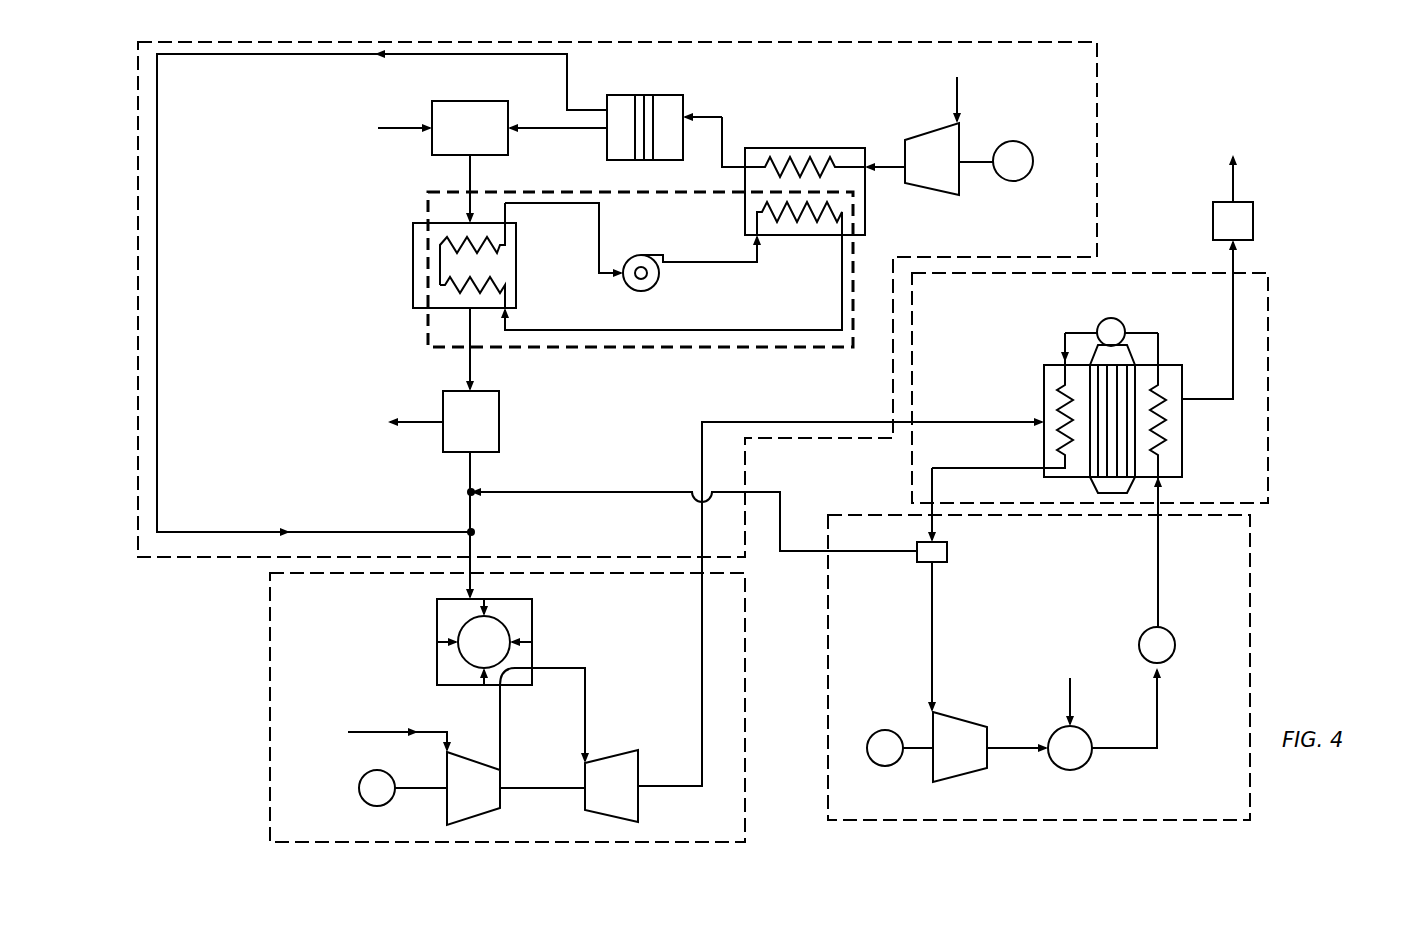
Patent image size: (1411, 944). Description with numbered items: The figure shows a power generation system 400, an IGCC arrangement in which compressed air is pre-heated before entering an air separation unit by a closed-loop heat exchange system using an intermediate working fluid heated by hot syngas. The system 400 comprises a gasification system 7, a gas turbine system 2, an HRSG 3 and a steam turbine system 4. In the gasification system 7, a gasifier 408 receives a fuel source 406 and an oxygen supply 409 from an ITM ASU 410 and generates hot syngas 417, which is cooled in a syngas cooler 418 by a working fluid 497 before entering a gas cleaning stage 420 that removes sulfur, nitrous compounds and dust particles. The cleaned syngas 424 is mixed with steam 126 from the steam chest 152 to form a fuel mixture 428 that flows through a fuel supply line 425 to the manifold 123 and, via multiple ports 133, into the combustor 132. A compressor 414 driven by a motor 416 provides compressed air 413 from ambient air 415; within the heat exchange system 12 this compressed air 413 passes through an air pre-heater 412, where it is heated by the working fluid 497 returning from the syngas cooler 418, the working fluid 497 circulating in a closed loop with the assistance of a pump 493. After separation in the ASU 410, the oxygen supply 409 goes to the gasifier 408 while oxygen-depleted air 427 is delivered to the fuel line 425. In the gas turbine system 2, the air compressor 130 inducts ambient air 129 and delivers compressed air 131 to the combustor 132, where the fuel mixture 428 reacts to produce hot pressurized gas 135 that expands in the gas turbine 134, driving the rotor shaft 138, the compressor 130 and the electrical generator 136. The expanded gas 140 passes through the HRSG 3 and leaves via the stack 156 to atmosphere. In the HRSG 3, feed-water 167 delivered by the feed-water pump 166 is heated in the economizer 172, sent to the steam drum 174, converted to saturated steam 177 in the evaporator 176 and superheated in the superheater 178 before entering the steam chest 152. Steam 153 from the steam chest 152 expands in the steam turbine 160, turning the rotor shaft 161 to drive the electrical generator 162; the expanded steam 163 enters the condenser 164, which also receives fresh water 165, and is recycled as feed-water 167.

The power generation system 400 is at (1301, 89).
The gasification system 7 is at (1097, 85).
The heat exchange system 12 is at (672, 347).
The gas turbine system 2 is at (270, 628).
The Heat Recovery Steam Generator 3 is at (1268, 336).
The steam turbine system 4 is at (1250, 575).
The oxygen-depleted air 427 is at (250, 520).
The gasifier 408 is at (470, 100).
The fuel source 406 is at (379, 128).
The ITM ASU 410 is at (657, 95).
The oxygen supply 409 is at (556, 137).
The compressed air 413 is at (702, 107).
The air pre-heater 412 is at (795, 148).
The compressor 414 is at (925, 190).
The ambient air 415 is at (968, 103).
The motor 416 is at (1013, 181).
The hot syngas 417 is at (455, 182).
The syngas cooler 418 is at (413, 262).
The working fluid 497 is at (574, 186).
The pump 493 is at (655, 287).
The gas cleaning stage 420 is at (499, 412).
The cleaned syngas 424 is at (456, 482).
The steam 126 is at (557, 483).
The fuel supply line 425 is at (468, 514).
The fuel mixture 428 is at (485, 522).
The manifold 123 is at (437, 612).
The combustor 132 is at (500, 624).
The ports 133 is at (515, 642).
The hot pressurized gas 135 is at (594, 698).
The ambient air 129 is at (392, 722).
The air compressor 130 is at (447, 810).
The electrical generator 136 is at (362, 778).
The rotor shaft 138 is at (573, 790).
The compressed air 131 is at (515, 735).
The gas turbine 134 is at (638, 812).
The expanded gas 140 is at (688, 716).
The stack 156 is at (1253, 218).
The superheater 178 is at (1058, 410).
The evaporator 176 is at (1085, 462).
The steam drum 174 is at (1114, 320).
The economizer 172 is at (1165, 410).
The saturated steam 177 is at (1080, 325).
The steam chest 152 is at (947, 552).
The steam 153 is at (945, 640).
The steam turbine 160 is at (960, 782).
The rotor shaft 161 is at (920, 760).
The electrical generator 162 is at (918, 735).
The expanded steam 163 is at (1025, 735).
The condenser 164 is at (1085, 766).
The fresh water 165 is at (1073, 705).
The feed-water pump 166 is at (1145, 633).
The feed-water 167 is at (1170, 583).